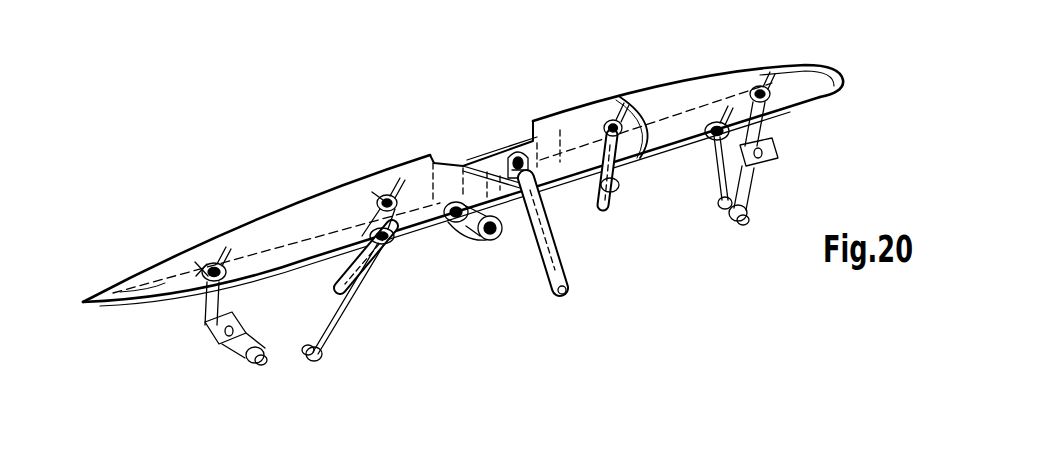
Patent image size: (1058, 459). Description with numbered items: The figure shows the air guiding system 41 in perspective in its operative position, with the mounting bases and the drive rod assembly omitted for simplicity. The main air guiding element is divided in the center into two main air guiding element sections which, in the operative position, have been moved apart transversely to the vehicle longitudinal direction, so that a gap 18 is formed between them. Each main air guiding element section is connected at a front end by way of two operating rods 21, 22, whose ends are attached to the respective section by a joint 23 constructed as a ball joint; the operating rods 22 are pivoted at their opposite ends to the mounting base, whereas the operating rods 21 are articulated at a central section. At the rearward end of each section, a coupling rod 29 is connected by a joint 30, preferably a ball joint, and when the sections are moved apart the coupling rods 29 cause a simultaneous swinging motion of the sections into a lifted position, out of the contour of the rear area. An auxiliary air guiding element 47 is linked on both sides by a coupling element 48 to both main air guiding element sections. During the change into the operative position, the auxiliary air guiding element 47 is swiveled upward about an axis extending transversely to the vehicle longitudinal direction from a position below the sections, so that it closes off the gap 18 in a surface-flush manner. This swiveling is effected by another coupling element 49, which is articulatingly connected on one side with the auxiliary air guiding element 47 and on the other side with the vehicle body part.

The air guiding system 41 is at (125, 203).
The gap 18 is at (450, 150).
The operating rod 21 is at (230, 348).
The operating rod 22 is at (343, 280).
The joint 23 is at (212, 257).
The coupling rod 29 is at (343, 327).
The joint 30 is at (395, 243).
The auxiliary air guiding element 47 is at (543, 143).
The coupling element 48 is at (467, 240).
The coupling element 49 is at (543, 257).